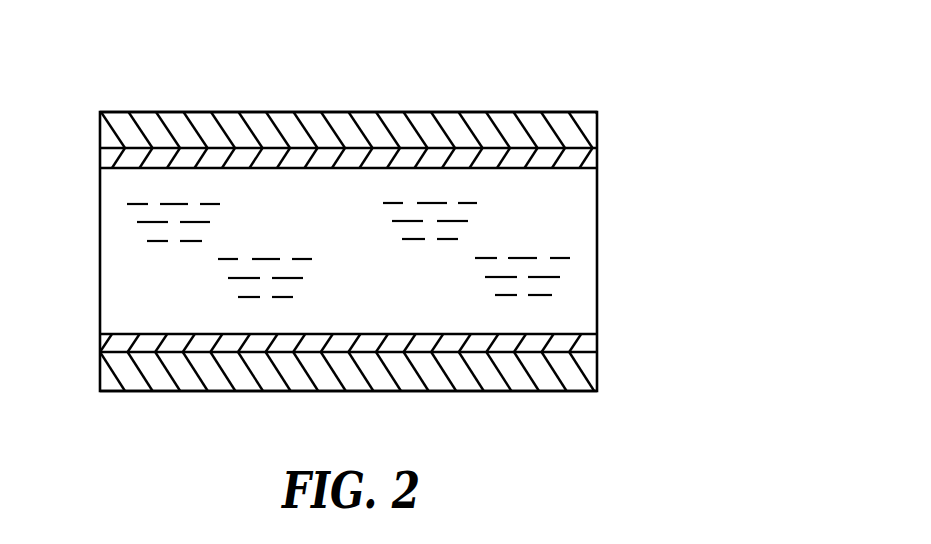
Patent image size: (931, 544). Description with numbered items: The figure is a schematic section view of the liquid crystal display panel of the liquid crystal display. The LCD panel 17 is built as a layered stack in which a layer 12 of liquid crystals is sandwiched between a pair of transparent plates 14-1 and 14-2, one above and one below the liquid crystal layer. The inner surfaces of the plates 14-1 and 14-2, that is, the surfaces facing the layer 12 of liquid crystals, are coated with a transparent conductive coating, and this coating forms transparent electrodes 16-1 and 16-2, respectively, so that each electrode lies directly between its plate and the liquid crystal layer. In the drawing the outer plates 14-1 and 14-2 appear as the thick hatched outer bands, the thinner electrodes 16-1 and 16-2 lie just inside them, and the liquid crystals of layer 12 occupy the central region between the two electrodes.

The LCD panel 17 is at (488, 82).
The transparent plate 14-1 is at (598, 115).
The transparent electrode 16-1 is at (598, 153).
The layer of liquid crystals 12 is at (598, 257).
The transparent electrode 16-2 is at (598, 341).
The transparent plate 14-2 is at (598, 378).